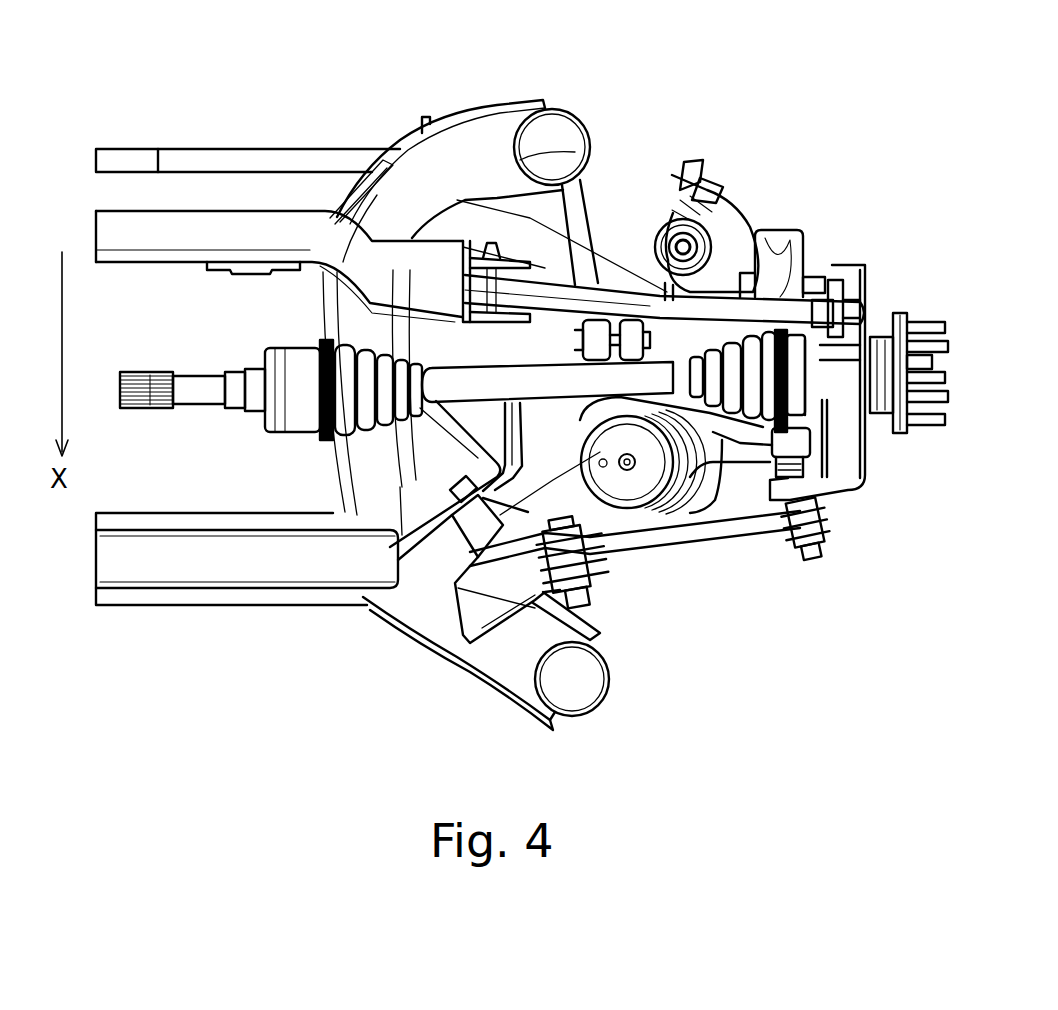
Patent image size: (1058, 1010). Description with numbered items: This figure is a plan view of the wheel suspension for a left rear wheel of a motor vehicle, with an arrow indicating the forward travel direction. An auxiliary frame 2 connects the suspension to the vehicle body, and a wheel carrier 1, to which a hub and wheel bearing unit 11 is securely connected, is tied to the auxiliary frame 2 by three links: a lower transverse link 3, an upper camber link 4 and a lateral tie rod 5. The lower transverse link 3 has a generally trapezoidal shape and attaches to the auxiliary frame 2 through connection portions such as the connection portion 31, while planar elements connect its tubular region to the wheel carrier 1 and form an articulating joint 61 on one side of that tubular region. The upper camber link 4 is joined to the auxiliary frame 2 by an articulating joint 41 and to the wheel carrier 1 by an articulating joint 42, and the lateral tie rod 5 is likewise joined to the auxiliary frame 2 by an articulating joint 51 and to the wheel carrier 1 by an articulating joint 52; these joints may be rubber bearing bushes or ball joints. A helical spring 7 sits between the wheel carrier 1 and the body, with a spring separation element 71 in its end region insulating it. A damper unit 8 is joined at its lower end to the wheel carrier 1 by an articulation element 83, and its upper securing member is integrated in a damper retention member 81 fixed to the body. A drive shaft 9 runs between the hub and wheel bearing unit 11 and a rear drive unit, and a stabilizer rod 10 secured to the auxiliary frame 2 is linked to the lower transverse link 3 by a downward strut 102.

The wheel carrier 1 is at (866, 258).
The auxiliary frame 2 is at (180, 612).
The lower transverse link 3 is at (629, 482).
The upper camber link 4 is at (653, 303).
The lateral tie rod 5 is at (712, 533).
The helical spring 7 is at (720, 483).
The damper unit 8 is at (727, 238).
The drive shaft 9 is at (557, 377).
The stabilizer rod 10 is at (203, 160).
The hub and wheel bearing unit 11 is at (887, 340).
The connection portion 31 is at (468, 527).
The articulating joint 41 is at (470, 240).
The articulating joint 42 is at (817, 285).
The articulating joint 51 is at (590, 600).
The articulating joint 52 is at (827, 517).
The articulating joint 61 is at (800, 443).
The spring separation element 71 is at (650, 500).
The damper retention member 81 is at (685, 178).
The articulation element 83 is at (775, 250).
The downward strut 102 is at (633, 330).